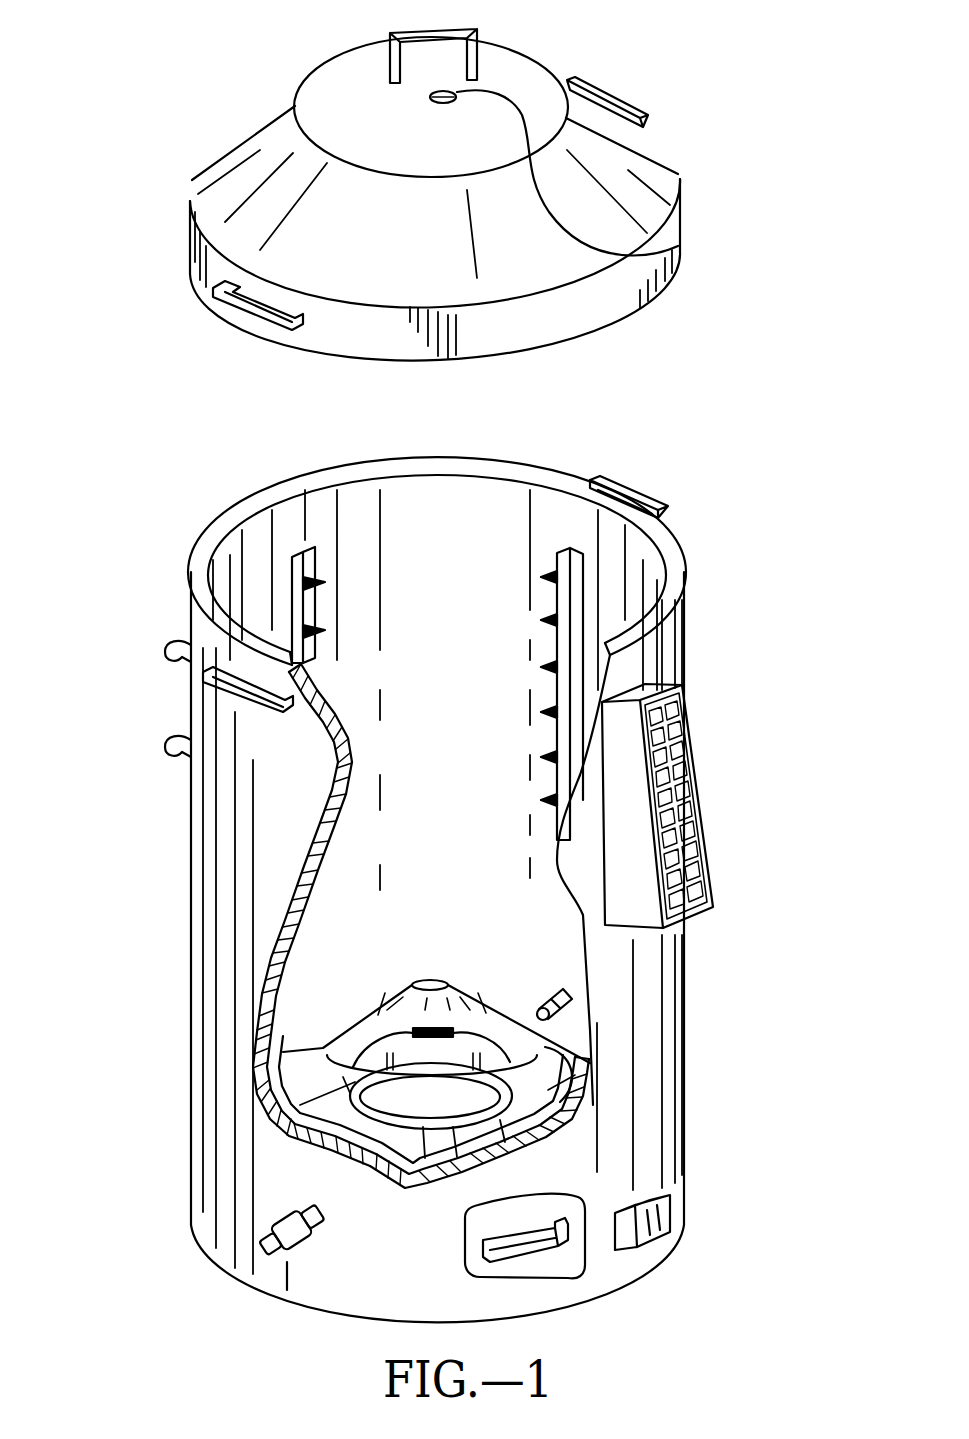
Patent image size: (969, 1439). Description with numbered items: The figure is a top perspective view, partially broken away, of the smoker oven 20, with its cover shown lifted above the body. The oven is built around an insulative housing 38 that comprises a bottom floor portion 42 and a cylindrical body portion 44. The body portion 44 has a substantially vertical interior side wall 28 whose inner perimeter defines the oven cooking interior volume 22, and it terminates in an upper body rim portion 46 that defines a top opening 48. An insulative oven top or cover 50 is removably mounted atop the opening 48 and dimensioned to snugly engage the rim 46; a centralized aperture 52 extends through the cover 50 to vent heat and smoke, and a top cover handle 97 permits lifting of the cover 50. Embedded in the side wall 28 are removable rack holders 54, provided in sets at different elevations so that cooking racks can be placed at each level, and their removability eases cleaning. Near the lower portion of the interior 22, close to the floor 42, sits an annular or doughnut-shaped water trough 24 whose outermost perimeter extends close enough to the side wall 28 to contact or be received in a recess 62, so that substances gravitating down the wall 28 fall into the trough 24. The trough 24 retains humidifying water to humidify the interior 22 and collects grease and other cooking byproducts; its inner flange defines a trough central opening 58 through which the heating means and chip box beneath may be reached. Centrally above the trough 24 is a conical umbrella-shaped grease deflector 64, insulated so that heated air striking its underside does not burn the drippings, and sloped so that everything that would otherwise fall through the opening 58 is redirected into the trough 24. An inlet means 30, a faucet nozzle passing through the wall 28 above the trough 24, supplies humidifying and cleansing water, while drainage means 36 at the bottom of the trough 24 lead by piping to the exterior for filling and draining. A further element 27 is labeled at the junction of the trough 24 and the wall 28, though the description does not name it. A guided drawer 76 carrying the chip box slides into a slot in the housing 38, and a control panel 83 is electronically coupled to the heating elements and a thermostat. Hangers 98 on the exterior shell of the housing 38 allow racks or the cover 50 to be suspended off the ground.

The smoker oven 20 is at (762, 472).
The oven cooking interior volume 22 is at (474, 809).
The annular water trough 24 is at (262, 1097).
The gasket 27 is at (560, 1083).
The side wall 28 is at (636, 572).
The inlet means 30 is at (562, 1008).
The drainage means 36 is at (306, 1203).
The insulative housing 38 is at (153, 866).
The bottom floor portion 42 is at (316, 1308).
The cylindrical body portion 44 is at (185, 993).
The upper body rim portion 46 is at (677, 592).
The top opening 48 is at (490, 517).
The insulative oven top or cover 50 is at (471, 192).
The aperture 52 is at (622, 282).
The removable rack holders 54 is at (325, 618).
The trough central opening 58 is at (335, 1080).
The recess 62 is at (320, 1033).
The grease deflector 64 is at (422, 1057).
The guided drawer 76 is at (565, 1213).
The control panel 83 is at (700, 786).
The top cover handle 97 is at (448, 26).
The hangers 98 is at (160, 744).